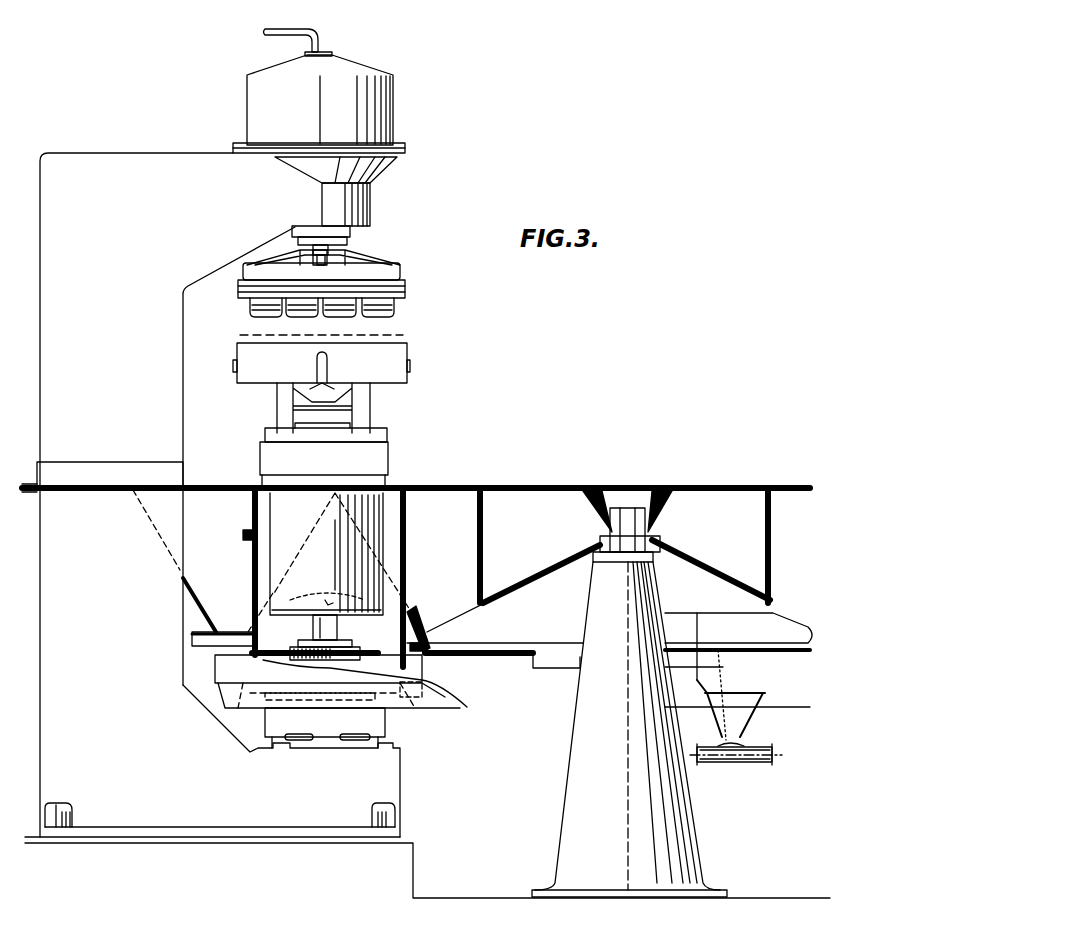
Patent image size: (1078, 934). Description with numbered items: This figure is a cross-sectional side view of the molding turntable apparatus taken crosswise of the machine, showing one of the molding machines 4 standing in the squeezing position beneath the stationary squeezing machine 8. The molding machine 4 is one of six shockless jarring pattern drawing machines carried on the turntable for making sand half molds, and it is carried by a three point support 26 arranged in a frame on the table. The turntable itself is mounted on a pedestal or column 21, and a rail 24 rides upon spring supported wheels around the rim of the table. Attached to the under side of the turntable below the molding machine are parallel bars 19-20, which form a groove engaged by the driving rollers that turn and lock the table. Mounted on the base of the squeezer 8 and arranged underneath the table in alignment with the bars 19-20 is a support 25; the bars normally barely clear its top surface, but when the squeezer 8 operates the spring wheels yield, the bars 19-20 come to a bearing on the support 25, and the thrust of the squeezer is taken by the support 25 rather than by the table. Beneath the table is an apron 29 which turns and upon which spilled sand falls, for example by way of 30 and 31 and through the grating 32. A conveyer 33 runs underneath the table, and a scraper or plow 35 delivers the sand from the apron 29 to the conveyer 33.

The squeezing machine 8 is at (176, 160).
The grating 32 is at (238, 484).
The sand spill path 31 is at (472, 489).
The sand spill path 30 is at (188, 583).
The molding machine 4 is at (329, 562).
The three point support 26 is at (327, 595).
The apron 29 is at (491, 652).
The rail 24 is at (222, 698).
The support 25 is at (339, 715).
The parallel bars 19-20 is at (403, 697).
The pedestal or column 21 is at (629, 724).
The scraper or plow 35 is at (724, 622).
The conveyer 33 is at (757, 762).